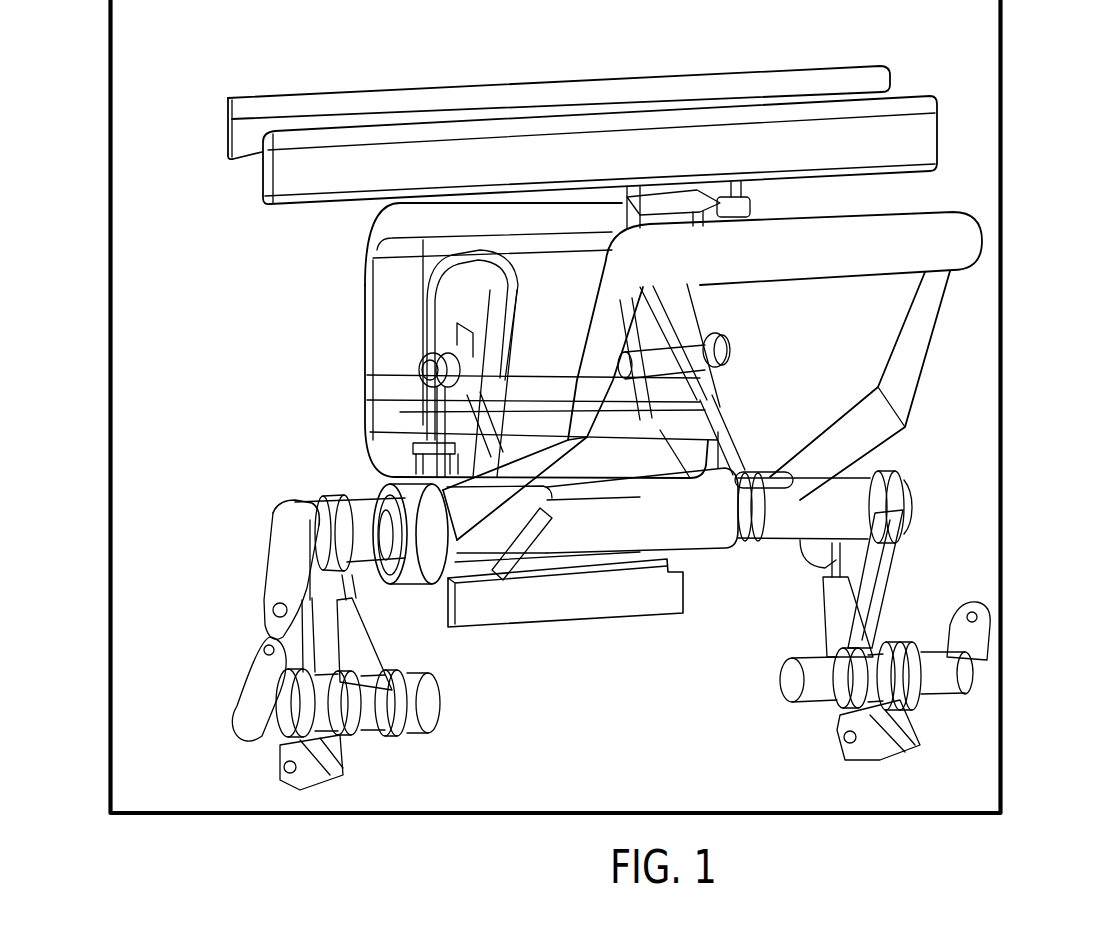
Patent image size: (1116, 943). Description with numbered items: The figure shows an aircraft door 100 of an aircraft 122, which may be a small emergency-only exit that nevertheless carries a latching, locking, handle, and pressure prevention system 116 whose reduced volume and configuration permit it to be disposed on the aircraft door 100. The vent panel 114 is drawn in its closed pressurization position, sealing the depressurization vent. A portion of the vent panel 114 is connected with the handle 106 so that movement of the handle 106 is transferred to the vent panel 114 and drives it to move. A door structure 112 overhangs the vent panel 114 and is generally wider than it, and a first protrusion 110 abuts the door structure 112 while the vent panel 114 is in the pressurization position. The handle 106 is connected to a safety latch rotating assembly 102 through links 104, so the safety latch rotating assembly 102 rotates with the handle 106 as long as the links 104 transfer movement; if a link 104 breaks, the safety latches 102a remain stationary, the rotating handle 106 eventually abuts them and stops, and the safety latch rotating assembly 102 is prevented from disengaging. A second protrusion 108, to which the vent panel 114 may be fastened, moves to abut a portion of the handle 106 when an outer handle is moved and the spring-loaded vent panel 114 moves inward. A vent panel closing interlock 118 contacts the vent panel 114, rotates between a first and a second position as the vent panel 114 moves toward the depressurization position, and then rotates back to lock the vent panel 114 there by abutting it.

The aircraft door 100 is at (162, 286).
The safety latch rotating assembly 102 is at (443, 700).
The safety latches 102a is at (343, 613).
The links 104 is at (297, 642).
The handle 106 is at (293, 525).
The second protrusion 108 is at (382, 431).
The first protrusion 110 is at (723, 346).
The door structure 112 is at (300, 170).
The vent panel 114 is at (387, 276).
The latching, locking, handle, and pressure prevention system 116 is at (203, 132).
The vent panel closing interlock 118 is at (527, 607).
The aircraft 122 is at (1032, 141).